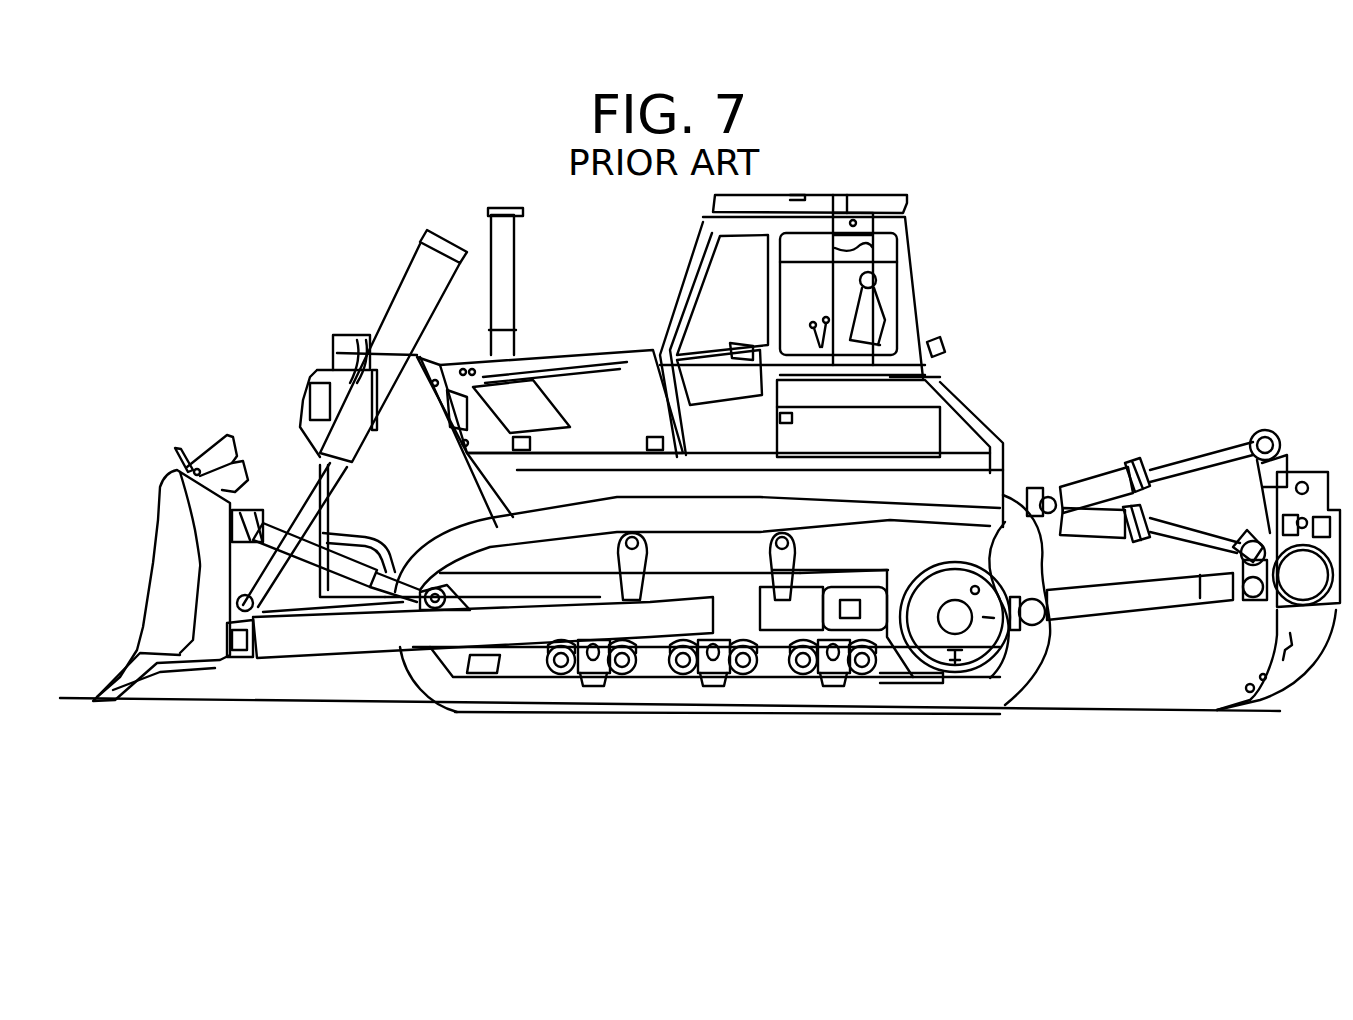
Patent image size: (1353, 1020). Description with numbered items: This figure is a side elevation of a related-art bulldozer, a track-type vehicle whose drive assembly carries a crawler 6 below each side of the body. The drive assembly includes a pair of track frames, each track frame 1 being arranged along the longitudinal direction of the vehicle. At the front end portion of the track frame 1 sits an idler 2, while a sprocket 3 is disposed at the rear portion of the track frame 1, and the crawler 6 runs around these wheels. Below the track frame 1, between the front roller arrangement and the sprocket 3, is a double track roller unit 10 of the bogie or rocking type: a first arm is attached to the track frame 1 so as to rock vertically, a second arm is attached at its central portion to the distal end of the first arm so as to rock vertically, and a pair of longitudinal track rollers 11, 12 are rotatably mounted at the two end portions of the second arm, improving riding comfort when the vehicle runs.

The track frame 1 is at (878, 575).
The idler 2 is at (430, 680).
The sprocket 3 is at (927, 680).
The crawler 6 is at (1030, 680).
The double track roller unit 10 is at (591, 688).
The track roller 11 is at (548, 677).
The track roller 12 is at (628, 672).